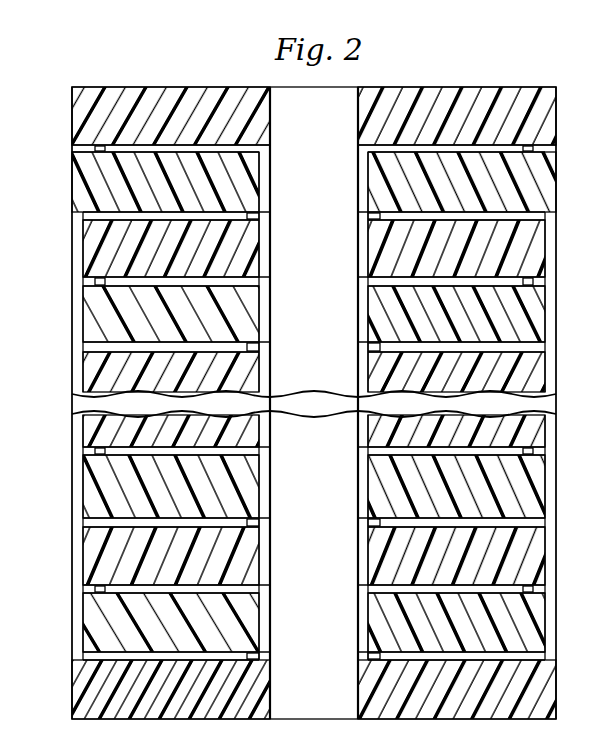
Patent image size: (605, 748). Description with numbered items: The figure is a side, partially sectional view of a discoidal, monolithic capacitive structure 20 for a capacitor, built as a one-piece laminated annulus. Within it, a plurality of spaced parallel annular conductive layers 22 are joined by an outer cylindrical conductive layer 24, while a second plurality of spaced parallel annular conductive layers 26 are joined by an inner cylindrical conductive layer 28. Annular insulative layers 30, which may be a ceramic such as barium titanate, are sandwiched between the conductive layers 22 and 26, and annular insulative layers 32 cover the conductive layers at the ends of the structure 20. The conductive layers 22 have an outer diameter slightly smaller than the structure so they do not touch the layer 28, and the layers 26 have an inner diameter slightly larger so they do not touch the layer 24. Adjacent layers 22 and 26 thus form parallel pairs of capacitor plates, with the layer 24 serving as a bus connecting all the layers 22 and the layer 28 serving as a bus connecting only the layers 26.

The discoidal monolithic capacitive structure 20 is at (416, 70).
The annular conductive layers 22 is at (100, 148).
The outer cylindrical conductive layer 24 is at (273, 238).
The annular conductive layers 26 is at (258, 215).
The inner cylindrical conductive layer 28 is at (72, 241).
The annular insulative layers 30 is at (80, 178).
The annular insulative layers 32 is at (80, 116).